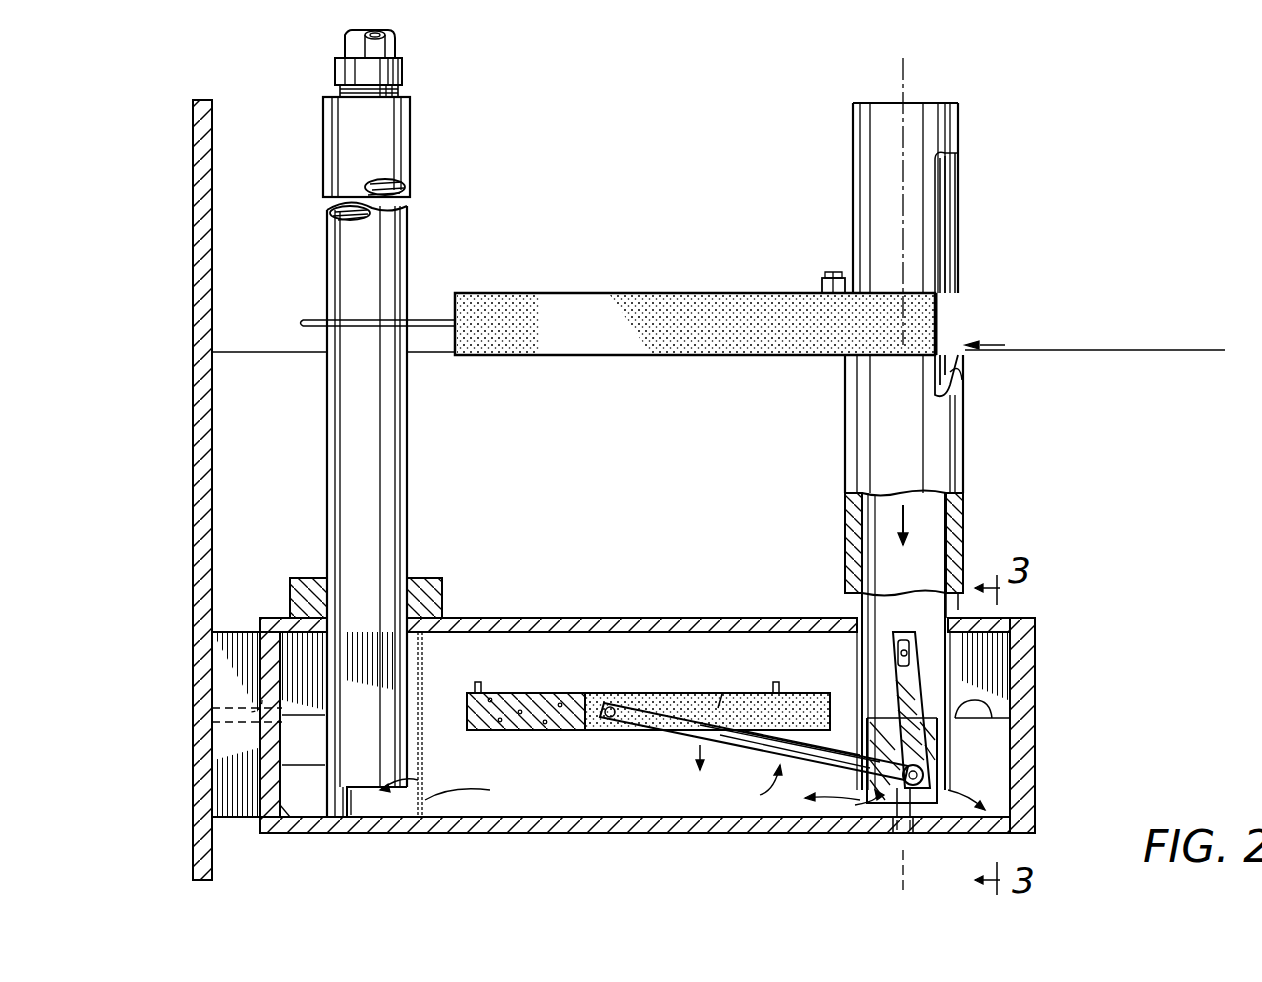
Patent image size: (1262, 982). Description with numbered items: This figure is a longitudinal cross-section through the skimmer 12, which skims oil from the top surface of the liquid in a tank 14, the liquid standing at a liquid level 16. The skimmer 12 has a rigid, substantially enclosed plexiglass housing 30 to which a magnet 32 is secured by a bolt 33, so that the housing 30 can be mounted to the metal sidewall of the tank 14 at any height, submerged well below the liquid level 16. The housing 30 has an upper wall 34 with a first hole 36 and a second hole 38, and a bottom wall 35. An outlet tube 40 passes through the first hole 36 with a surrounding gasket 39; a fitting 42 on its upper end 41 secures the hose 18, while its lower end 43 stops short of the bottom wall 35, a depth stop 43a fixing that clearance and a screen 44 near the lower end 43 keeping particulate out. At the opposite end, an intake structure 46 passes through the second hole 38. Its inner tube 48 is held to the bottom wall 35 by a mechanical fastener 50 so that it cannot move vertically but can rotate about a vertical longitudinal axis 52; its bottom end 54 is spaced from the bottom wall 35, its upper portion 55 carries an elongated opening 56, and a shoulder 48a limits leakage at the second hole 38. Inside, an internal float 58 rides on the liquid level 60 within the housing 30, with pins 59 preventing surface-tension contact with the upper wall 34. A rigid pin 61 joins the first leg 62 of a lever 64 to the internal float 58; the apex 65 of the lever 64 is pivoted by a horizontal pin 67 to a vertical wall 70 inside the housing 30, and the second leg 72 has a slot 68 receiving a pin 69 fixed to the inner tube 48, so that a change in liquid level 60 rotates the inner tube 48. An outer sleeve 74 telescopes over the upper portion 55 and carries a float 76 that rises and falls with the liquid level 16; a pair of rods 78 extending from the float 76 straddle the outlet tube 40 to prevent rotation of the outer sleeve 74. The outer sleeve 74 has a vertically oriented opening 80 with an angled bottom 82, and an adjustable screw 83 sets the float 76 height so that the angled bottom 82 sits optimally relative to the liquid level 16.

The skimmer 12 is at (1085, 100).
The tank 14 is at (193, 286).
The liquid level 16 is at (1130, 350).
The hose 18 is at (395, 45).
The housing 30 is at (592, 618).
The magnet 32 is at (230, 764).
The bolt 33 is at (262, 700).
The upper wall 34 is at (657, 618).
The bottom wall 35 is at (612, 833).
The first hole 36 is at (418, 632).
The second hole 38 is at (862, 625).
The gasket 39 is at (442, 578).
The outlet tube 40 is at (408, 440).
The upper end 41 is at (400, 97).
The fitting 42 is at (335, 78).
The lower end 43 is at (348, 817).
The depth stop 43a is at (303, 817).
The screen 44 is at (422, 760).
The intake structure 46 is at (985, 478).
The inner tube 48 is at (862, 145).
The shoulder 48a is at (960, 618).
The mechanical fastener 50 is at (903, 833).
The longitudinal axis 52 is at (903, 68).
The bottom end 54 is at (950, 790).
The upper portion 55 is at (960, 118).
The elongated opening 56 is at (940, 191).
The internal float 58 is at (540, 693).
The pins 59 is at (480, 682).
The liquid level 60 is at (985, 695).
The rigid pin 61 is at (606, 722).
The first leg 62 is at (741, 742).
The lever 64 is at (739, 749).
The apex 65 is at (923, 777).
The pin 67 is at (918, 768).
The slot 68 is at (898, 648).
The pin 69 is at (901, 655).
The vertical wall 70 is at (858, 800).
The second leg 72 is at (920, 675).
The outer sleeve 74 is at (845, 422).
The float 76 is at (638, 293).
The rods 78 is at (303, 321).
The vertically oriented opening 80 is at (940, 318).
The angled bottom 82 is at (950, 385).
The adjustable screw 83 is at (834, 272).